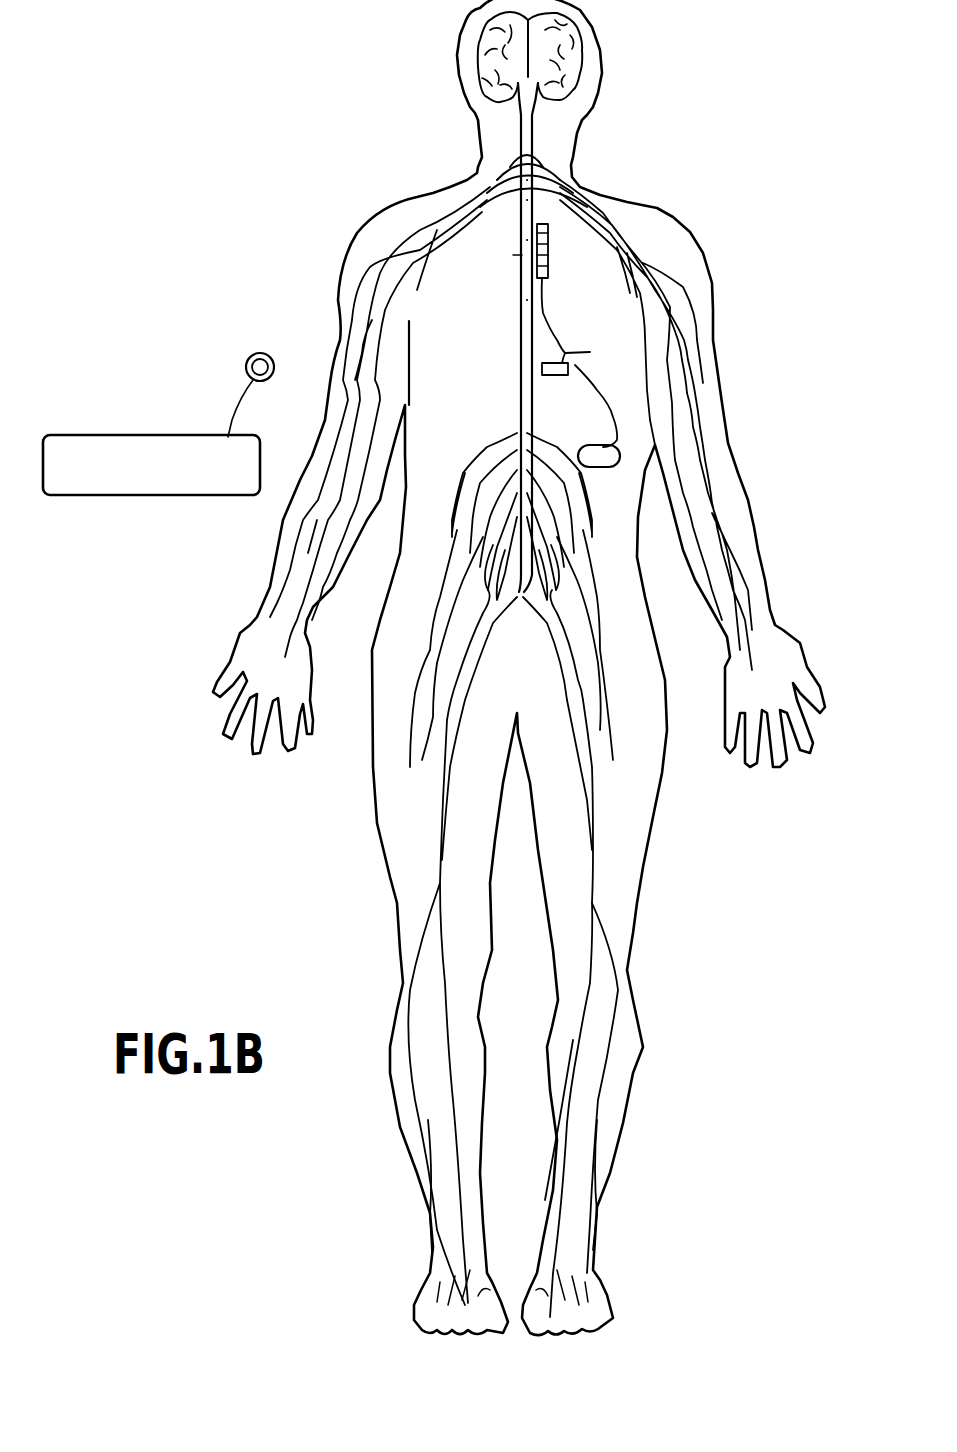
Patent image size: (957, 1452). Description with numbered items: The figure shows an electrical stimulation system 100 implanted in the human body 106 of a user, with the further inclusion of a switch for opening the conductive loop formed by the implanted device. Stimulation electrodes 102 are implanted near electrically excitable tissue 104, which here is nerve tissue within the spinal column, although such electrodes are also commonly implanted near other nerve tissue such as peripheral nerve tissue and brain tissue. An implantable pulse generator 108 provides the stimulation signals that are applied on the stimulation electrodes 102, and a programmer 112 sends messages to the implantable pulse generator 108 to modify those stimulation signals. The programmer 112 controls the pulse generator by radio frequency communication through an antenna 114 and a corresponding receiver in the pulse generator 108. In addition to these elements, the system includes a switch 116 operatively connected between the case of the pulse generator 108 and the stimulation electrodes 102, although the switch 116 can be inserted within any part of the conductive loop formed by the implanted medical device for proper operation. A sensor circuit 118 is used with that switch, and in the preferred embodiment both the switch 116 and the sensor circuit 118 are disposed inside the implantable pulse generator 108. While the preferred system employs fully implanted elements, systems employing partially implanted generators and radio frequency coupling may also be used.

The electrical stimulation system 100 is at (272, 287).
The stimulation electrodes 102 is at (551, 249).
The electrically excitable tissue 104 is at (507, 258).
The human body 106 is at (628, 196).
The implantable pulse generator 108 is at (606, 470).
The programmer 112 is at (80, 433).
The antenna 114 is at (300, 337).
The switch 116 is at (588, 345).
The sensor circuit 118 is at (547, 377).